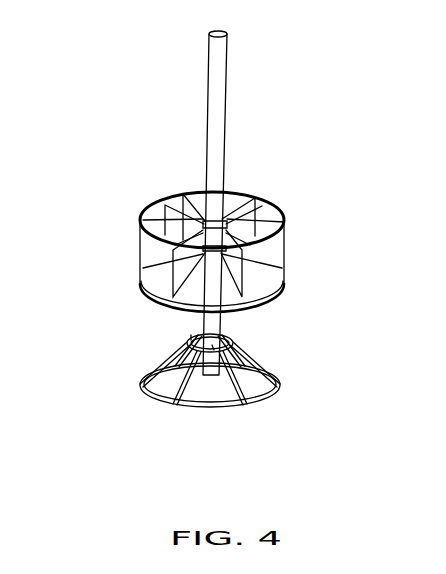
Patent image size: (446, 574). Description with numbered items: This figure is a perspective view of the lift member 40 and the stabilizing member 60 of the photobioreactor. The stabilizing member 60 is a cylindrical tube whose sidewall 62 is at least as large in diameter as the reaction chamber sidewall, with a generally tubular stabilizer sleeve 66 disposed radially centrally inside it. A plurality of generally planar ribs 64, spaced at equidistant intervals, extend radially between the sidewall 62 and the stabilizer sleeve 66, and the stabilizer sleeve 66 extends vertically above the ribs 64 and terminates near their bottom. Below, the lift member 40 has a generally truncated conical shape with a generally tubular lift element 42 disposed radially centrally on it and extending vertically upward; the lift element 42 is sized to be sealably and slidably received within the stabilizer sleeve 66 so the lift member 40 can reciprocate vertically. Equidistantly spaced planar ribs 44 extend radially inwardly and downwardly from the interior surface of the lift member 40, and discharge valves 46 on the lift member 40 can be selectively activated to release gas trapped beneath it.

The stabilizer sleeve 66 is at (218, 95).
The stabilizing member 60 is at (241, 201).
The sidewall 62 is at (190, 190).
The ribs 64 is at (166, 231).
The lift member 40 is at (229, 334).
The lift element 42 is at (220, 328).
The ribs 44 is at (183, 368).
The discharge valves 46 is at (212, 346).